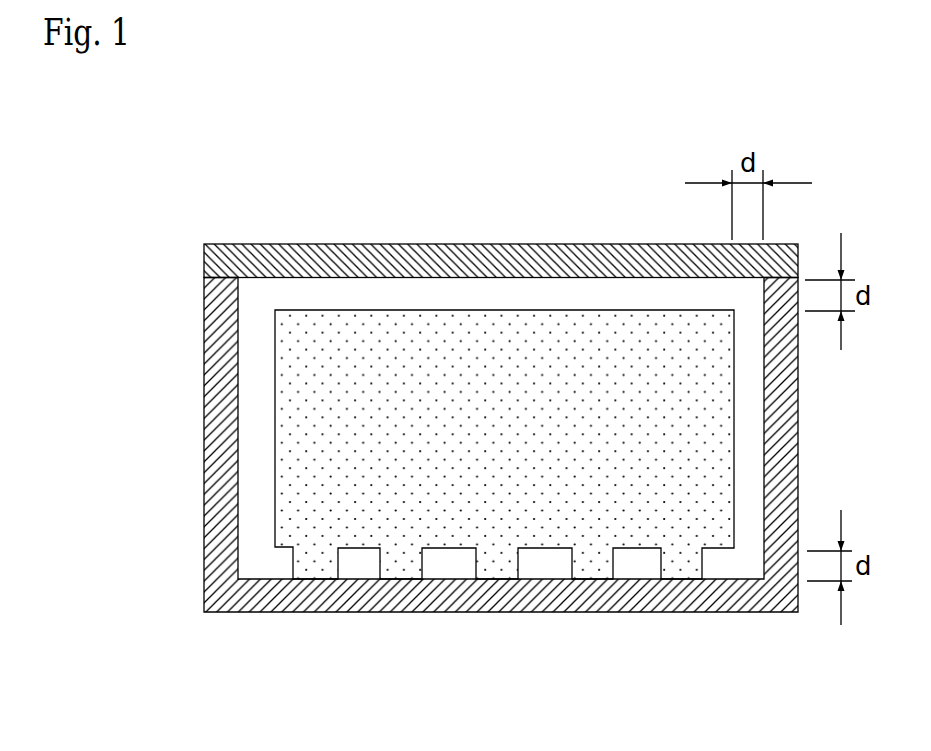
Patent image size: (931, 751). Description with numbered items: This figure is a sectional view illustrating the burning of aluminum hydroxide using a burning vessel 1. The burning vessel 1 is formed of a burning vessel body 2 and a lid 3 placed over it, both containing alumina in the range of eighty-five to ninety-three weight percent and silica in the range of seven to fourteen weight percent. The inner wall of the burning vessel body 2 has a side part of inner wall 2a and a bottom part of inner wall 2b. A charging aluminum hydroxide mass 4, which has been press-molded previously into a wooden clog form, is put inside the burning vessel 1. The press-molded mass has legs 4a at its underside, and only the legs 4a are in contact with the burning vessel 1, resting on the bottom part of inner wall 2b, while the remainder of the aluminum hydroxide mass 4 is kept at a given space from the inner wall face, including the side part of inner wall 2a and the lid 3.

The burning vessel 1 is at (442, 377).
The burning vessel body 2 is at (205, 337).
The side part of inner wall 2a is at (238, 437).
The bottom part of inner wall 2b is at (276, 578).
The lid 3 is at (267, 257).
The aluminum hydroxide mass 4 is at (416, 307).
The legs 4a is at (338, 562).